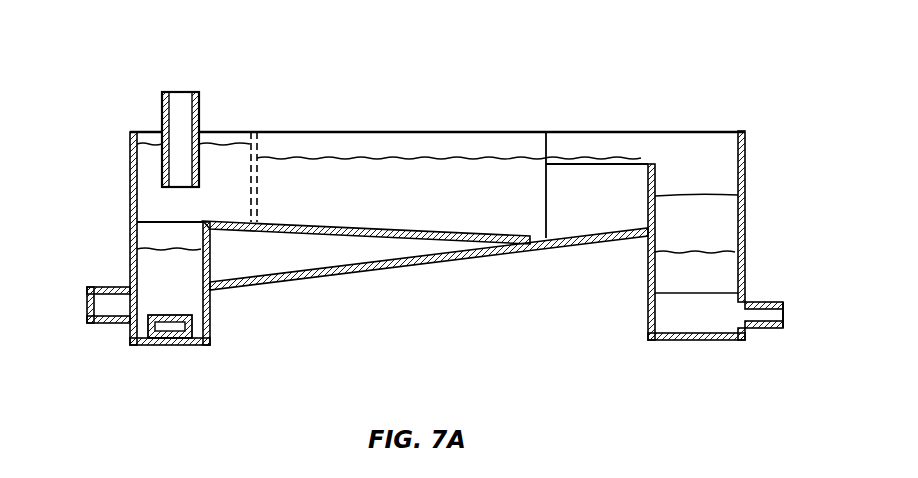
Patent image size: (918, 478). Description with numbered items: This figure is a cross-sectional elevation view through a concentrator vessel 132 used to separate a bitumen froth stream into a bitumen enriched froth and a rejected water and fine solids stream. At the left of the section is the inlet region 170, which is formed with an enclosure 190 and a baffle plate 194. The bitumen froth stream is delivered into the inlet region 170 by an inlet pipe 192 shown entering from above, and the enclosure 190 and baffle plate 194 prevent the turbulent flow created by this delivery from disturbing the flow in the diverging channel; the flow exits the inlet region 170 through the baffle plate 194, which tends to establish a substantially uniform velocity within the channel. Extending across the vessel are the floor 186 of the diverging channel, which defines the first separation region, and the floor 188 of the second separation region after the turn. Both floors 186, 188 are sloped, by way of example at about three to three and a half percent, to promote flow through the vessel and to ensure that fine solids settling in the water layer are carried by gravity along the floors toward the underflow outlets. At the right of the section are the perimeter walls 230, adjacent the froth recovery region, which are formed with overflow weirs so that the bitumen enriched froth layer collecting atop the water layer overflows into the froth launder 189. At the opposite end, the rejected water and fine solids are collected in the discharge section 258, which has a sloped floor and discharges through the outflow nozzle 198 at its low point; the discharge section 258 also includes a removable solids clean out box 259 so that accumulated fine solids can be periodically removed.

The housing 132 is at (411, 122).
The inlet region 170 is at (224, 118).
The enclosure 190 is at (147, 181).
The inlet pipe 192 is at (165, 108).
The baffle plate 194 is at (257, 177).
The froth launder 189 is at (697, 153).
The perimeter walls 230 is at (657, 155).
The outflow nozzle 198 is at (110, 285).
The discharge section 258 is at (170, 297).
The removable solids clean out box 259 is at (173, 325).
The floor of diverging channel 186 is at (407, 238).
The floor of second separation region 188 is at (315, 277).